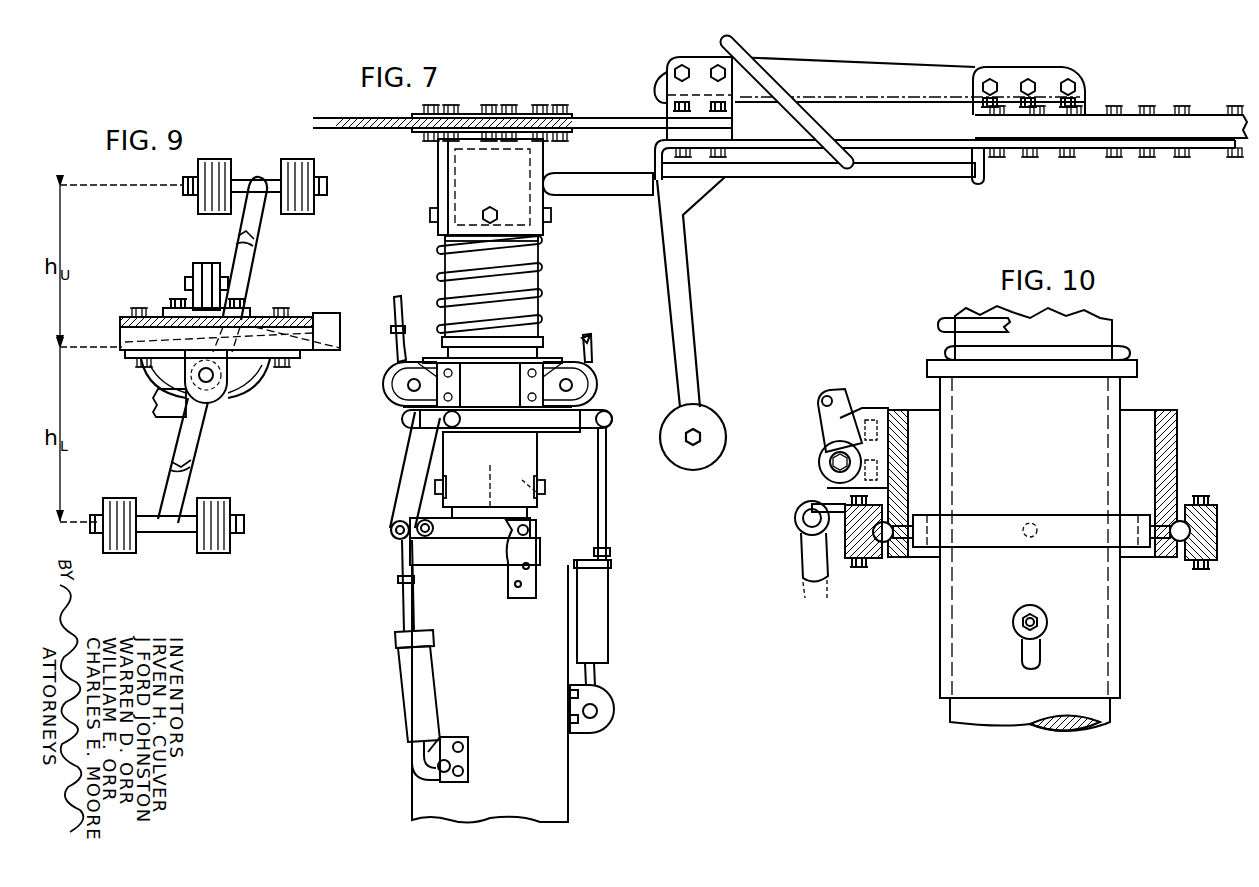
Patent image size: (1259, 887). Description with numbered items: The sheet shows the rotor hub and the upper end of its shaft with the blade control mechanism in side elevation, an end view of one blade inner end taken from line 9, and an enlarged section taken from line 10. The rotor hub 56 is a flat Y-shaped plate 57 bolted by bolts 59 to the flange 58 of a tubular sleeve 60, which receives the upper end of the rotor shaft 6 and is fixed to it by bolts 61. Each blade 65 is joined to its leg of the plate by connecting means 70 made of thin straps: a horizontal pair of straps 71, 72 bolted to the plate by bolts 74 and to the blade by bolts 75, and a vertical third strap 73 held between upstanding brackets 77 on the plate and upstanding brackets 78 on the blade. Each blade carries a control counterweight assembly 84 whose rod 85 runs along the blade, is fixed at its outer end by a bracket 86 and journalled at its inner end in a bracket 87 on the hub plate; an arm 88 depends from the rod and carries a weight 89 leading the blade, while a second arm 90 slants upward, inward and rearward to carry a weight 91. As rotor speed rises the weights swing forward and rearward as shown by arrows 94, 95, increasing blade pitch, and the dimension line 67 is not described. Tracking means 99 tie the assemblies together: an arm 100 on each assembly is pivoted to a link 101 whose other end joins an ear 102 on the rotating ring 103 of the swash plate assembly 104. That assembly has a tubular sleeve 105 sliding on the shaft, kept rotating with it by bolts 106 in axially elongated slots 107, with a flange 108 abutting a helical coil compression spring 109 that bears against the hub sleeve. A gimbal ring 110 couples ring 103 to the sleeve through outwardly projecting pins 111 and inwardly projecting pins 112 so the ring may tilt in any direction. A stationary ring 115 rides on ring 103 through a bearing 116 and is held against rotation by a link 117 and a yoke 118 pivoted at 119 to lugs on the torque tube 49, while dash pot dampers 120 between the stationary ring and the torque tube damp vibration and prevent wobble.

In FIG. 7, the rotor shaft 6 is at (530, 515).
In FIG. 10, the rotor shaft 6 is at (1097, 711).
In FIG. 7, the section line 9— 9 is at (646, 34).
In FIG. 7, the section line 10— 10 is at (488, 330).
In FIG. 7, the torque tube 49 is at (566, 776).
In FIG. 7, the rotor hub 56 is at (530, 103).
In FIG. 9, the Y-shaped plate 57 is at (163, 313).
In FIG. 7, the Y-shaped plate 57 is at (632, 118).
In FIG. 7, the flange 58 is at (413, 131).
In FIG. 7, the bolts 59 is at (483, 142).
In FIG. 7, the tubular sleeve 60 is at (538, 166).
In FIG. 7, the bolts 61 is at (486, 212).
In FIG. 9, the blade 65 is at (290, 333).
In FIG. 7, the blade 65 is at (1200, 128).
In FIG. 9, the rail web 67 is at (128, 338).
In FIG. 7, the connecting means 70 is at (890, 54).
In FIG. 9, the strap 71 is at (122, 353).
In FIG. 9, the strap 72 is at (297, 355).
In FIG. 7, the strap 72 is at (900, 142).
In FIG. 9, the third strap 73 is at (205, 263).
In FIG. 7, the third strap 73 is at (889, 93).
In FIG. 7, the bolts 74 is at (685, 158).
In FIG. 7, the bolts 75 is at (1033, 158).
In FIG. 7, the upstanding brackets 77 is at (705, 62).
In FIG. 7, the upstanding brackets 78 is at (1046, 80).
In FIG. 7, the control counterweight assembly 84 is at (735, 215).
In FIG. 9, the rod 85 is at (222, 396).
In FIG. 7, the rod 85 is at (812, 177).
In FIG. 9, the bracket 86 is at (258, 377).
In FIG. 7, the bracket 86 is at (986, 178).
In FIG. 9, the bracket 87 is at (226, 380).
In FIG. 7, the bracket 87 is at (656, 146).
In FIG. 9, the arm 88 is at (192, 446).
In FIG. 7, the arm 88 is at (692, 350).
In FIG. 9, the weight 89 is at (137, 545).
In FIG. 7, the weight 89 is at (716, 424).
In FIG. 9, the second arm 90 is at (244, 262).
In FIG. 7, the second arm 90 is at (815, 127).
In FIG. 9, the weight 91 is at (297, 160).
In FIG. 9, the arrow 94 is at (78, 470).
In FIG. 9, the arrow 95 is at (344, 240).
In FIG. 7, the tracking means 99 is at (568, 206).
In FIG. 10, the tracking means 99 is at (875, 402).
In FIG. 9, the arm 100 is at (168, 391).
In FIG. 7, the arm 100 is at (640, 196).
In FIG. 7, the link 101 is at (394, 298).
In FIG. 10, the link 101 is at (838, 390).
In FIG. 7, the ear 102 is at (410, 370).
In FIG. 10, the ear 102 is at (819, 463).
In FIG. 7, the rotating ring 103 is at (510, 398).
In FIG. 10, the rotating ring 103 is at (1160, 410).
In FIG. 7, the swash plate assembly 104 is at (402, 412).
In FIG. 10, the swash plate assembly 104 is at (1195, 472).
In FIG. 7, the tubular sleeve 105 is at (528, 456).
In FIG. 10, the tubular sleeve 105 is at (1088, 423).
In FIG. 7, the bolts 106 is at (546, 486).
In FIG. 10, the bolts 106 is at (1014, 627).
In FIG. 7, the slots 107 is at (513, 487).
In FIG. 10, the slots 107 is at (1041, 650).
In FIG. 7, the flange 108 is at (536, 340).
In FIG. 10, the flange 108 is at (1126, 371).
In FIG. 7, the helical coil compression spring 109 is at (542, 247).
In FIG. 10, the helical coil compression spring 109 is at (1118, 346).
In FIG. 10, the gimbal ring 110 is at (962, 523).
In FIG. 10, the pins 111 is at (906, 520).
In FIG. 10, the pins 112 is at (1038, 521).
In FIG. 7, the stationary ring 115 is at (553, 430).
In FIG. 10, the stationary ring 115 is at (877, 560).
In FIG. 10, the bearing 116 is at (1181, 546).
In FIG. 7, the link 117 is at (420, 465).
In FIG. 10, the link 117 is at (808, 556).
In FIG. 7, the yoke 118 is at (494, 540).
In FIG. 7, the pivot connection 119 is at (531, 528).
In FIG. 7, the dash pot dampers 120 is at (412, 705).